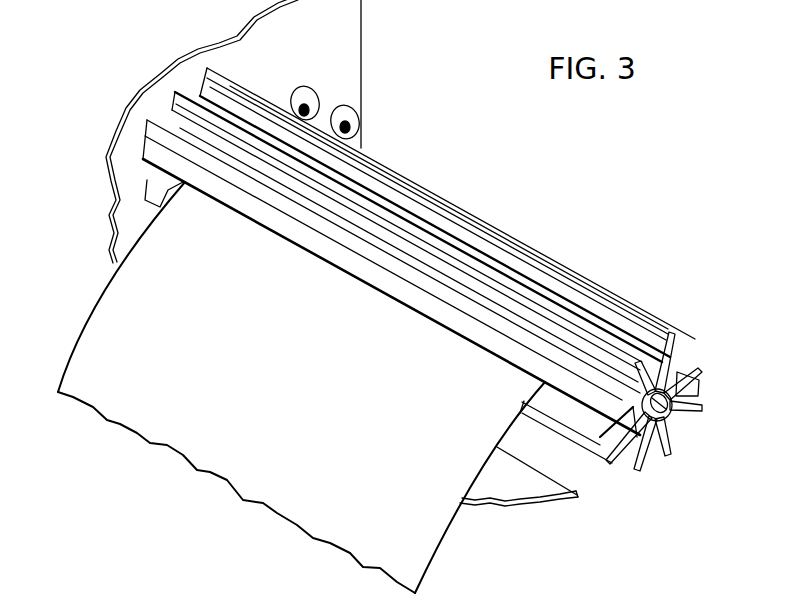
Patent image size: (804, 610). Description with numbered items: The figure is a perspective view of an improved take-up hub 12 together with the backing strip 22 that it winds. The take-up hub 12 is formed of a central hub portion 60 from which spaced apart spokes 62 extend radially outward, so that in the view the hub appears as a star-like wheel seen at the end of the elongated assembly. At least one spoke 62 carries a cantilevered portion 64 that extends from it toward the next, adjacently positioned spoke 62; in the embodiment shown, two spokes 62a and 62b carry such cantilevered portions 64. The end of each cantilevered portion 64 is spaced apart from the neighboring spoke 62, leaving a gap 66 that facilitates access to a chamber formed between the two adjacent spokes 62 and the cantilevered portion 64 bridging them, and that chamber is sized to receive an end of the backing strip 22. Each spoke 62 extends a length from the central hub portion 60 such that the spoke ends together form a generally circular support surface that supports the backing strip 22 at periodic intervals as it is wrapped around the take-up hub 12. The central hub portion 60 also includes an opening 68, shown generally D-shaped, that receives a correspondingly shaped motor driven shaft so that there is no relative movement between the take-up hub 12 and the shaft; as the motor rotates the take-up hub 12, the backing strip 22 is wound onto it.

The take-up hub 12 is at (458, 293).
The backing strip 22 is at (93, 323).
The central hub portion 60 is at (687, 399).
The spokes 62 is at (670, 332).
The spoke 62a is at (700, 420).
The spoke 62b is at (500, 363).
The cantilevered portion 64 is at (701, 393).
The gap 66 is at (703, 370).
The opening 68 is at (672, 412).